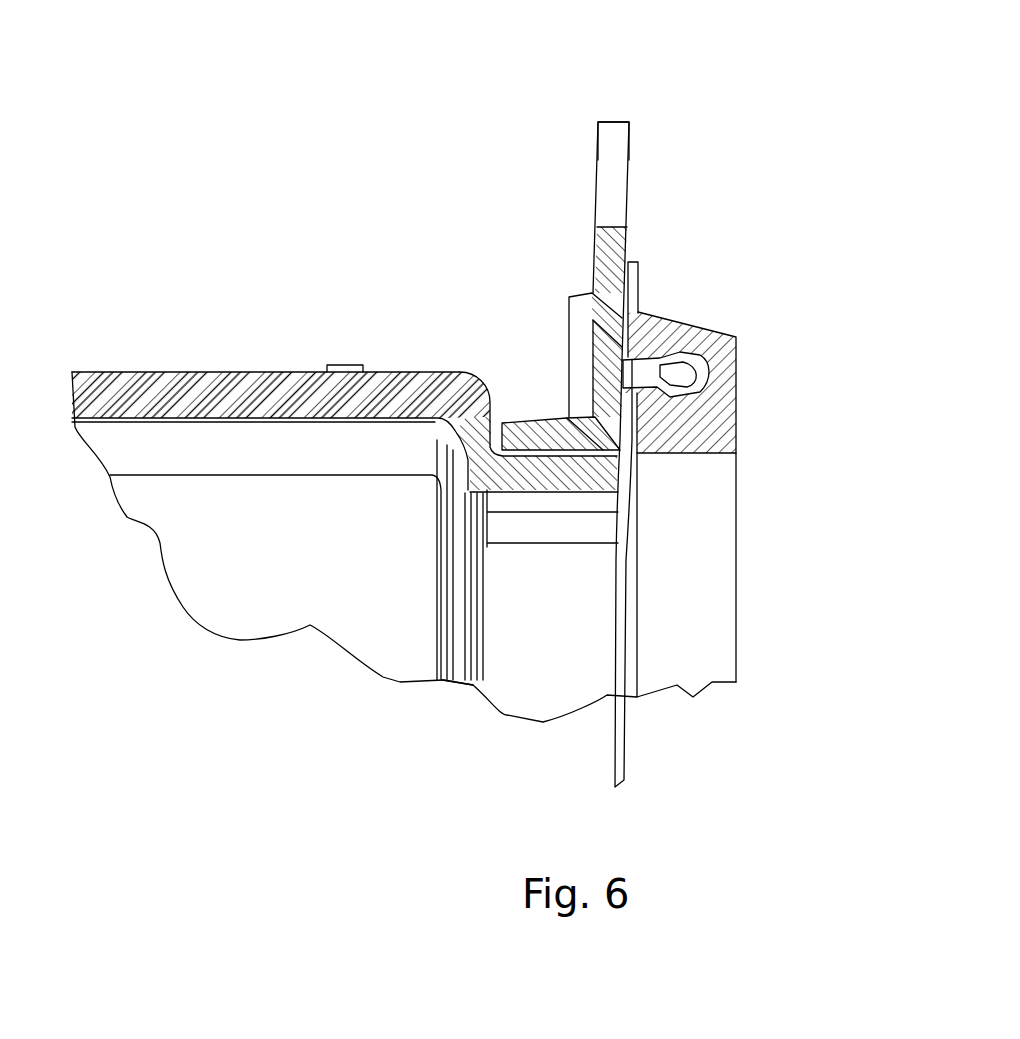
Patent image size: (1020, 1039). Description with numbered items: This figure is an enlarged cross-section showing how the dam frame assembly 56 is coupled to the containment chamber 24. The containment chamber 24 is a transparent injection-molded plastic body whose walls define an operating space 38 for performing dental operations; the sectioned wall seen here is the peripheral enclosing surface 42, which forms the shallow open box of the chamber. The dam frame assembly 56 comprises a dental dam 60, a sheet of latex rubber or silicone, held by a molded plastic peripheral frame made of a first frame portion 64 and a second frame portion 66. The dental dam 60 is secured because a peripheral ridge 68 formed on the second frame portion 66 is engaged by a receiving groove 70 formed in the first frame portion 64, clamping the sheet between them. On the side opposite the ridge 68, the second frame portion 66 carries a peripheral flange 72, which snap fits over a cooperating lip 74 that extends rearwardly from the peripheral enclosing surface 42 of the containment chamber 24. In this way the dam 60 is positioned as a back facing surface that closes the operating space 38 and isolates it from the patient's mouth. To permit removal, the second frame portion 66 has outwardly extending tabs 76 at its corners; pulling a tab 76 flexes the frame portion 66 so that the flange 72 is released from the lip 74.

The containment chamber 24 is at (243, 378).
The operating space 38 is at (235, 542).
The peripheral enclosing surface 42 is at (160, 453).
The dam frame assembly 56 is at (667, 127).
The dental dam 60 is at (626, 527).
The first frame portion 64 is at (732, 337).
The second frame portion 66 is at (596, 262).
The peripheral ridge 68 is at (680, 370).
The receiving groove 70 is at (714, 378).
The peripheral flange 72 is at (523, 418).
The lip 74 is at (542, 478).
The tab 76 is at (597, 146).